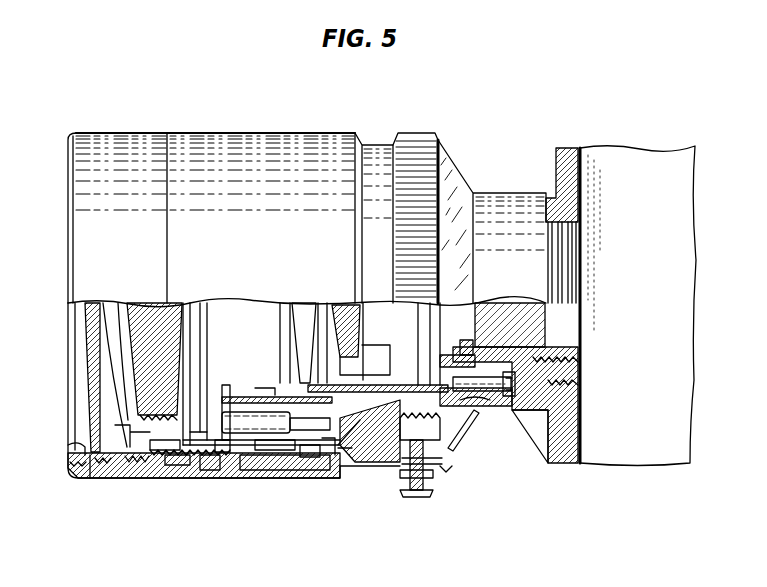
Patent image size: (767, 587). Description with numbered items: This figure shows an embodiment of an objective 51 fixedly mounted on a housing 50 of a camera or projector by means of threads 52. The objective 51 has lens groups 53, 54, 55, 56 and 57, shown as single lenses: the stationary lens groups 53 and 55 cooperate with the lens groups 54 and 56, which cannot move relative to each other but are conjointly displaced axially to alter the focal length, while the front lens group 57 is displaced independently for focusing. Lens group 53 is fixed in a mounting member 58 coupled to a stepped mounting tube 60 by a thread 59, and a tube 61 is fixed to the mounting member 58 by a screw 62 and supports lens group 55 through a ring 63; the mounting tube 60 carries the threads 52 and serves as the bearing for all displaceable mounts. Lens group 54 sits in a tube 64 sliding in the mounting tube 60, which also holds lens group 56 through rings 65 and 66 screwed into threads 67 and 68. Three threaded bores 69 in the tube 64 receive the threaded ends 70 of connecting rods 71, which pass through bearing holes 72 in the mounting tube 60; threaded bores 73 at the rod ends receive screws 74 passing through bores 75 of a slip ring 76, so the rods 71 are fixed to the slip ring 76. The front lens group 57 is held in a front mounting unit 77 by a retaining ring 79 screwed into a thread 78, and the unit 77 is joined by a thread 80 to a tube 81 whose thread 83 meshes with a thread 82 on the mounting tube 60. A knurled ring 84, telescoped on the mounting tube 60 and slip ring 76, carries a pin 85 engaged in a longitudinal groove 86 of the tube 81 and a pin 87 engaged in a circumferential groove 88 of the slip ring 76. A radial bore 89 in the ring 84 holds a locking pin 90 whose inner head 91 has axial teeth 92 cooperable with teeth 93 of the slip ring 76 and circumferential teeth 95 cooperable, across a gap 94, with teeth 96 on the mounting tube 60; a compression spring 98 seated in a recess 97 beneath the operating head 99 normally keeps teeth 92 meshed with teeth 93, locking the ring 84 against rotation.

The housing 50 is at (562, 152).
The objective 51 is at (268, 143).
The threads 52 is at (579, 384).
The lens group 53 is at (503, 308).
The lens group 54 is at (341, 312).
The lens group 55 is at (295, 310).
The lens group 56 is at (152, 308).
The lens group 57 is at (90, 332).
The mounting member 58 is at (417, 362).
The thread 59 is at (579, 357).
The stepped mounting tube 60 is at (535, 400).
The tube 61 is at (397, 372).
The screw 62 is at (454, 378).
The ring 63 is at (271, 388).
The tube 64 is at (365, 392).
The ring 65 is at (127, 440).
The ring 66 is at (174, 418).
The thread 67 is at (179, 462).
The thread 68 is at (195, 447).
The threaded bores 69 is at (225, 452).
The threaded ends 70 is at (223, 397).
The connecting rods 71 is at (237, 418).
The bearing holes 72 is at (299, 452).
The threaded bores 73 is at (291, 432).
The screws 74 is at (352, 432).
The bores 75 is at (371, 388).
The slip ring 76 is at (385, 458).
The front mounting unit 77 is at (93, 480).
The thread 78 is at (68, 468).
The retaining ring 79 is at (69, 448).
The thread 80 is at (135, 470).
The tube 81 is at (211, 472).
The thread 82 is at (159, 452).
The thread 83 is at (99, 470).
The knurled ring 84 is at (414, 140).
The pin 85 is at (314, 458).
The groove 86 is at (255, 470).
The pin 87 is at (329, 462).
The groove 88 is at (344, 458).
The radial bore 89 is at (455, 456).
The locking pin 90 is at (411, 491).
The inner head 91 is at (444, 441).
The teeth 92 is at (397, 426).
The teeth 93 is at (387, 412).
The gap 94 is at (462, 402).
The teeth 95 is at (479, 426).
The teeth 96 is at (489, 396).
The recess 97 is at (445, 472).
The compression spring 98 is at (430, 479).
The operating head 99 is at (419, 498).